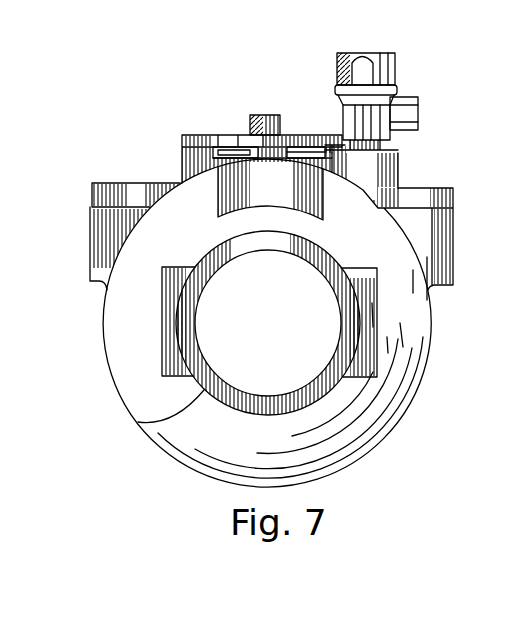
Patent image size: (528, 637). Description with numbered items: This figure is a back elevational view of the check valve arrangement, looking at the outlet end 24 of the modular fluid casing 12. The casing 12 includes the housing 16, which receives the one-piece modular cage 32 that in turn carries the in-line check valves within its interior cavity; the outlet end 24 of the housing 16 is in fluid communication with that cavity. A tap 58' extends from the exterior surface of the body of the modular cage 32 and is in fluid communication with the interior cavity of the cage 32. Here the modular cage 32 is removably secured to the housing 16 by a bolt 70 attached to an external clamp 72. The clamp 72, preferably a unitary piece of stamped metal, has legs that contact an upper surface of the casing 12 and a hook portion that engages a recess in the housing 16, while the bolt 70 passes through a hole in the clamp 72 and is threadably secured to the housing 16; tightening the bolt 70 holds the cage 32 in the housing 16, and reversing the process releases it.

The modular fluid casing 12 is at (412, 72).
The housing 16 is at (90, 283).
The outlet end 24 is at (138, 422).
The modular cage 32 is at (152, 183).
The tap 58' is at (398, 156).
The bolt 70 is at (247, 135).
The clamp 72 is at (223, 135).